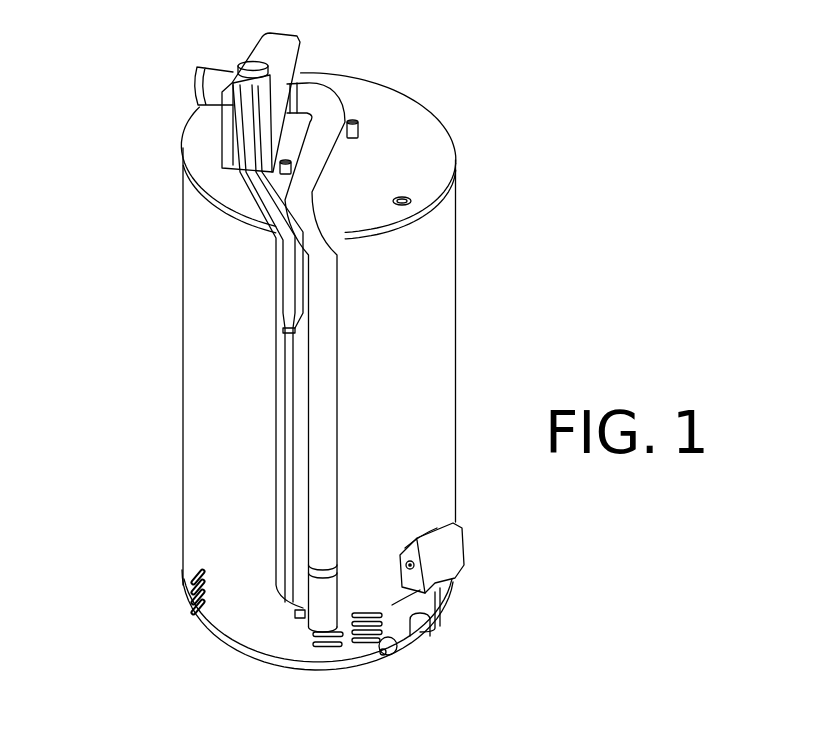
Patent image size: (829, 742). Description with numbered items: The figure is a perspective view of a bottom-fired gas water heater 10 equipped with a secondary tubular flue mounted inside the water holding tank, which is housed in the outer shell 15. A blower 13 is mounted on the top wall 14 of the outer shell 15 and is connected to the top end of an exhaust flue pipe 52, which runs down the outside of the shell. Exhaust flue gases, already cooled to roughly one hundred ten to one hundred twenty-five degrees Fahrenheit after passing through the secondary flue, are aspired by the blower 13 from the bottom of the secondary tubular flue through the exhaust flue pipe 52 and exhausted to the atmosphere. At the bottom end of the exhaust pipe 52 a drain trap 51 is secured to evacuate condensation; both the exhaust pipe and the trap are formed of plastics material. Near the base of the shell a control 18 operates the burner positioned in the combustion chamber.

The bottom-fired gas water heater 10 is at (132, 169).
The blower 13 is at (292, 72).
The top wall 14 is at (424, 141).
The outer shell 15 is at (207, 392).
The control 18 is at (445, 553).
The drain trap 51 is at (322, 617).
The exhaust flue pipe 52 is at (320, 427).